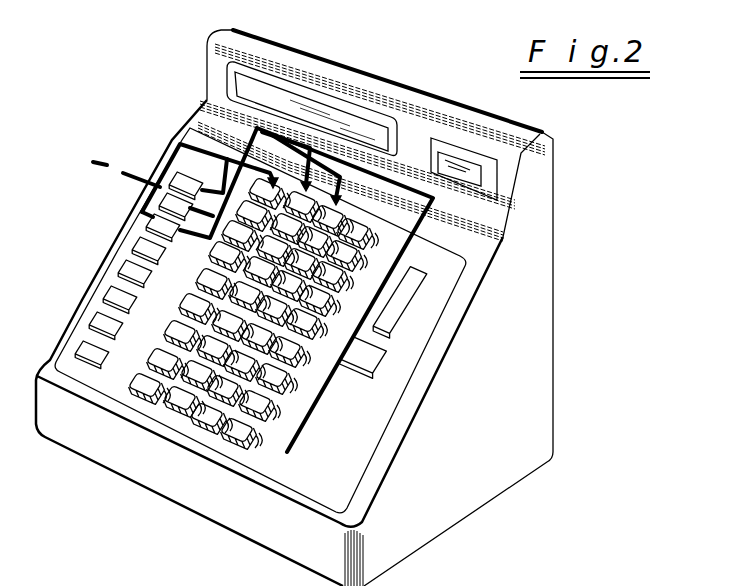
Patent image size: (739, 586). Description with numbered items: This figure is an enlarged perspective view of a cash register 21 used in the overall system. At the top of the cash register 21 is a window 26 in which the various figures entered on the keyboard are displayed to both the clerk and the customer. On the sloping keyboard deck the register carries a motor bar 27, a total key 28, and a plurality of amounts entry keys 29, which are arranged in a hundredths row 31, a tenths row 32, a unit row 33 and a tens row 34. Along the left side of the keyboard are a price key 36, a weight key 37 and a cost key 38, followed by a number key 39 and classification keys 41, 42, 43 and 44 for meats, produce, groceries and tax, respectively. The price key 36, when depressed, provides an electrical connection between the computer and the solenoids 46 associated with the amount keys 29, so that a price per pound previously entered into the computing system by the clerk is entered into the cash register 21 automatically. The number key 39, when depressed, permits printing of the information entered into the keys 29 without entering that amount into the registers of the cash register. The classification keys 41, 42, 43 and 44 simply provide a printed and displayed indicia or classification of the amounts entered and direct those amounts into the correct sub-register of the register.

The cash register 21 is at (548, 240).
The window 26 is at (236, 89).
The motor bar 27 is at (420, 268).
The total key 28 is at (382, 344).
The amounts entry keys 29 is at (200, 442).
The hundredths row 31 is at (231, 449).
The tenths row 32 is at (201, 426).
The unit row 33 is at (172, 409).
The tens row 34 is at (141, 395).
The price key 36 is at (169, 181).
The weight key 37 is at (159, 204).
The cost key 38 is at (146, 225).
The number key 39 is at (132, 247).
The classification key 41 is at (118, 271).
The classification key 42 is at (104, 296).
The classification key 43 is at (90, 322).
The classification key 44 is at (77, 350).
The solenoids 46 is at (302, 434).